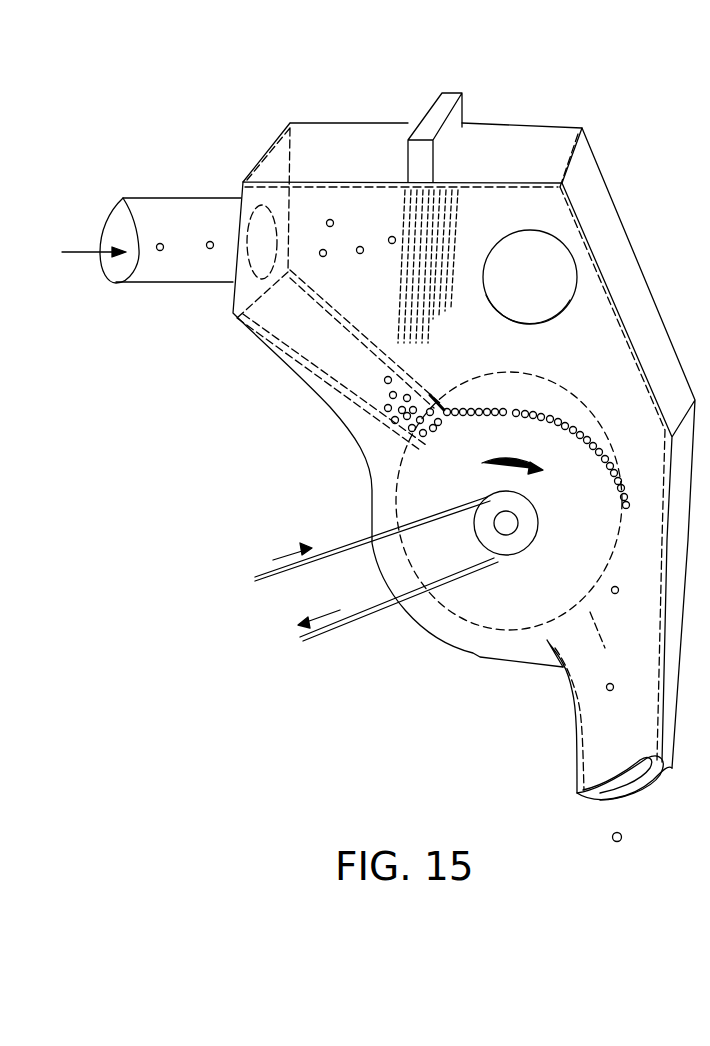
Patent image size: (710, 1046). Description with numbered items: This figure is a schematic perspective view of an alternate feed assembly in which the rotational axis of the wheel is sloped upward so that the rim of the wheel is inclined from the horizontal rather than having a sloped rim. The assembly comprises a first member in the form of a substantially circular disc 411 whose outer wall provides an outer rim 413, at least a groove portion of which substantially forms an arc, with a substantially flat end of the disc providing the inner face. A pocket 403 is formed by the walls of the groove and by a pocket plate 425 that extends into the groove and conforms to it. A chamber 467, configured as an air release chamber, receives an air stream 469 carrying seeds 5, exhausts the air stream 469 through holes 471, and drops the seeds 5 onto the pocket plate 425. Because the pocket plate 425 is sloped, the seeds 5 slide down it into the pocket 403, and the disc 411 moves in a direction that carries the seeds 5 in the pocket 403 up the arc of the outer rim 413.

The seeds 5 is at (208, 250).
The pocket 403 is at (431, 422).
The first member 411 is at (473, 627).
The outer rim 413 is at (557, 398).
The pocket plate 425 is at (342, 398).
The chamber 467 is at (609, 192).
The air stream 469 is at (78, 252).
The holes 471 is at (545, 275).